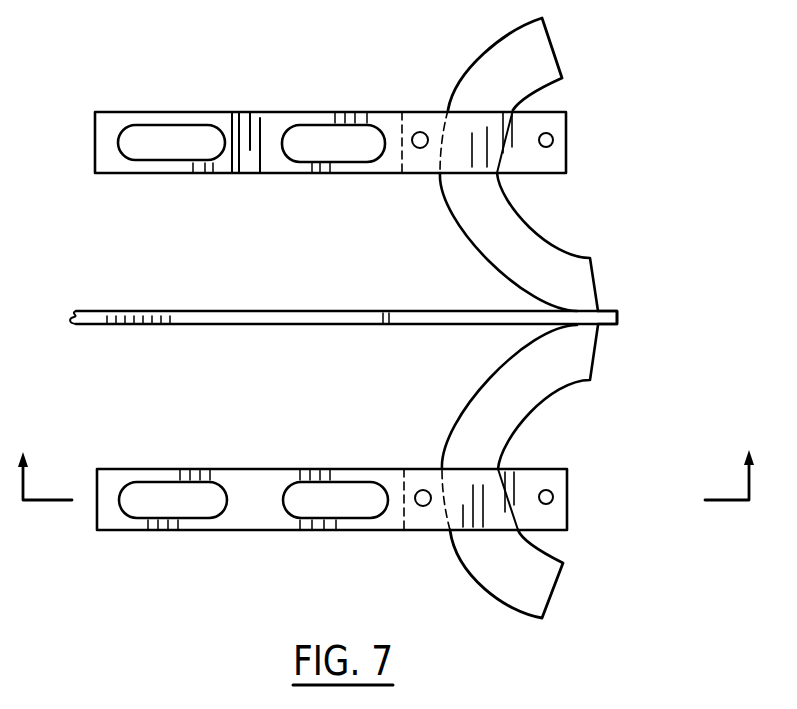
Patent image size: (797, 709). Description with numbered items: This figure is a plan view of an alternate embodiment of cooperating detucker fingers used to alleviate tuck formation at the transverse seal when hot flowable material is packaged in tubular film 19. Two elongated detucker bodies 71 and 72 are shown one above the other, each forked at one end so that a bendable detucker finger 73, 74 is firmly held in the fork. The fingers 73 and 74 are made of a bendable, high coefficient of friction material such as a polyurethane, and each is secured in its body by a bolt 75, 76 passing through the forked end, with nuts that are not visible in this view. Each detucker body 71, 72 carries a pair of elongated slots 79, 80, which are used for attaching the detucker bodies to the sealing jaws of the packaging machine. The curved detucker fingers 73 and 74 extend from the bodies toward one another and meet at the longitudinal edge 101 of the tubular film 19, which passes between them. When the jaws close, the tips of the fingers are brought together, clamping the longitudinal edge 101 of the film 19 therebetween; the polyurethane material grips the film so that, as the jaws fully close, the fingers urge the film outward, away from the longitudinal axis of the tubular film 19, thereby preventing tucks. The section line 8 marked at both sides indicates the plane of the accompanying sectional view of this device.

The section line 8 is at (388, 499).
The tubular film 19 is at (325, 325).
The detucker body 71 is at (257, 518).
The detucker body 72 is at (263, 175).
The detucker finger 73 is at (503, 418).
The detucker finger 74 is at (520, 235).
The bolt 75 is at (423, 507).
The bolt 76 is at (422, 132).
The slot 79 is at (190, 480).
The slot 80 is at (173, 152).
The longitudinal edge of tubular film 101 is at (623, 315).